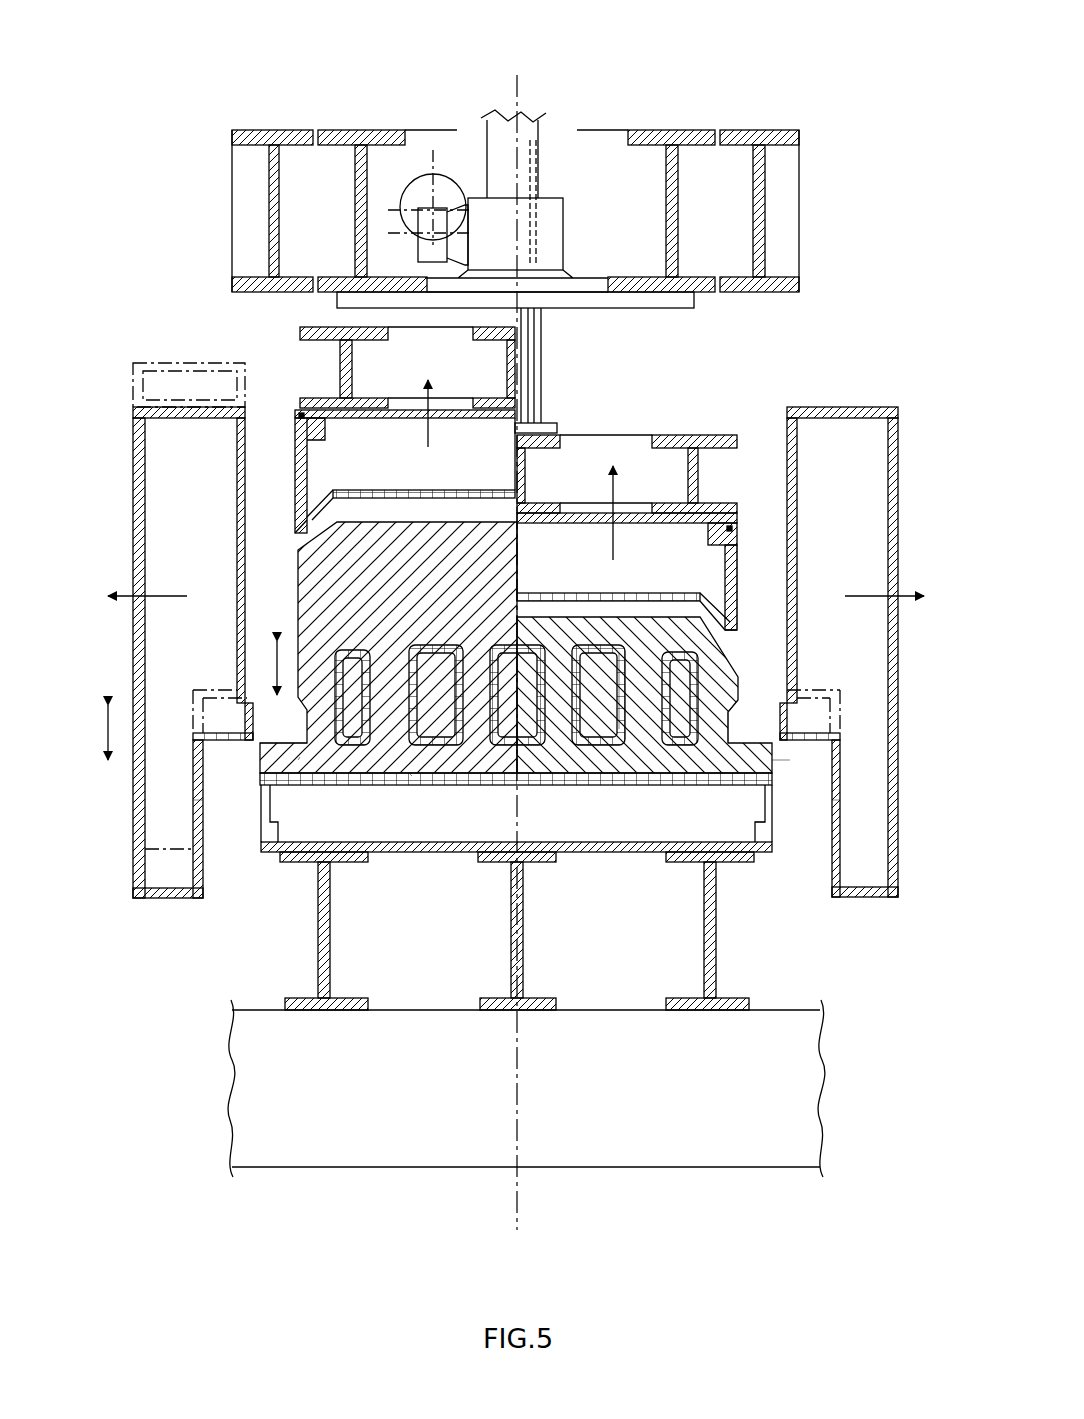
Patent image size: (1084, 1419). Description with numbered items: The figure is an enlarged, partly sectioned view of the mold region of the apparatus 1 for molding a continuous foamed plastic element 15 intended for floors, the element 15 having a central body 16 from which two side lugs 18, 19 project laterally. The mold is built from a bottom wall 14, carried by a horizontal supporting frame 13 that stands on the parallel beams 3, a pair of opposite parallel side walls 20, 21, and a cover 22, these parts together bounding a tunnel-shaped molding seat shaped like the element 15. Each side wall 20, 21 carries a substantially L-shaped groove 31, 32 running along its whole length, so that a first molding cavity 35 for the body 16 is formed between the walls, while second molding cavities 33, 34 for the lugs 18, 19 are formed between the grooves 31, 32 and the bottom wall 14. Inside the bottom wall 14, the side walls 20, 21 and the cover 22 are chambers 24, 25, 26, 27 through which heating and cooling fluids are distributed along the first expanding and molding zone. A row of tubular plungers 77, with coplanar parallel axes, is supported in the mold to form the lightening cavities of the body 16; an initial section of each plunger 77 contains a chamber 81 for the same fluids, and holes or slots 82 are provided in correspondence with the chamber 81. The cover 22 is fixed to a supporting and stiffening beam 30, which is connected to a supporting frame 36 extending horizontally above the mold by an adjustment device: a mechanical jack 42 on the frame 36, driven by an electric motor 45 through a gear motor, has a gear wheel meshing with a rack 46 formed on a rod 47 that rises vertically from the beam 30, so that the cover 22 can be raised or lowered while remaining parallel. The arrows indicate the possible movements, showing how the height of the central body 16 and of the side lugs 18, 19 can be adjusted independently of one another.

The apparatus 1 is at (145, 246).
The parallel beams 3 is at (790, 1078).
The horizontal supporting frame 13 is at (318, 970).
The bottom wall 14 is at (775, 823).
The continuous element 15 is at (742, 655).
The body 16 is at (298, 578).
The lug 18 is at (263, 752).
The lug 19 is at (750, 743).
The side wall 20 is at (172, 630).
The side wall 21 is at (859, 617).
The cover 22 is at (297, 432).
The chamber 24 is at (516, 817).
The chamber 25 is at (516, 521).
The chamber 26 is at (189, 630).
The chamber 27 is at (842, 652).
The supporting and stiffening beam 30 is at (300, 330).
The L-shaped groove 31 is at (212, 810).
The L-shaped groove 32 is at (822, 813).
The second molding cavity 33 is at (301, 765).
The second molding cavity 34 is at (788, 765).
The first molding cavity 35 is at (635, 620).
The supporting frame 36 is at (799, 185).
The mechanical jack 42 is at (543, 232).
The electric motor 45 is at (422, 192).
The rack 46 is at (535, 375).
The rod 47 is at (548, 140).
The tubular plunger 77 is at (410, 776).
The chamber 81 is at (598, 723).
The holes or slots 82 is at (628, 718).